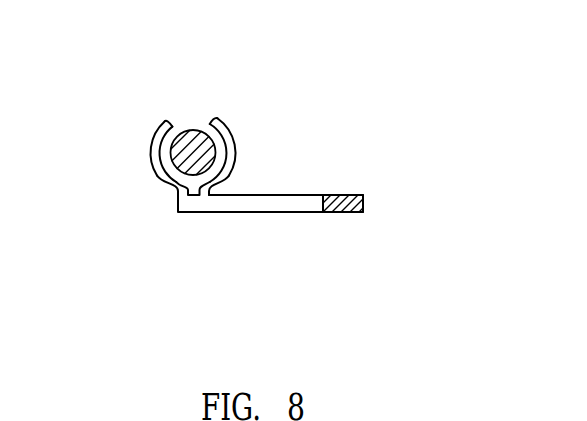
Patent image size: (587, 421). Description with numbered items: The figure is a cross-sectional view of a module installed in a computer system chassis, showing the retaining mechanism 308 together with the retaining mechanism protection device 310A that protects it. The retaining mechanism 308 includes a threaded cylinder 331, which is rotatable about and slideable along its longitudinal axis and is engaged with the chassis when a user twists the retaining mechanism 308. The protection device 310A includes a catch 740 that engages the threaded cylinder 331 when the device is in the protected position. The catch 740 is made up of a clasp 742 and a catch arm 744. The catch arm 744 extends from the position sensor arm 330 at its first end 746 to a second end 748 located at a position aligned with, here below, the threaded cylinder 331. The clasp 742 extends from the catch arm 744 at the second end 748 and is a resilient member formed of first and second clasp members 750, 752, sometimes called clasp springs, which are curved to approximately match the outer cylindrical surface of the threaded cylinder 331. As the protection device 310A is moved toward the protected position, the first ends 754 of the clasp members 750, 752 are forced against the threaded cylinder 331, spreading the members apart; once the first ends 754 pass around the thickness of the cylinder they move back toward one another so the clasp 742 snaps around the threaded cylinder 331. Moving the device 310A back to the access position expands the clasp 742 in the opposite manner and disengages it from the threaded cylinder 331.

The retaining mechanism 308 is at (204, 97).
The threaded cylinder 331 is at (202, 133).
The retaining mechanism protection device 310A is at (258, 179).
The clasp 742 is at (258, 198).
The first clasp member 750 is at (186, 119).
The second clasp member 752 is at (228, 152).
The first ends 754 is at (167, 119).
The second end 748 is at (192, 213).
The catch 740 is at (317, 246).
The catch arm 744 is at (303, 196).
The first end 746 is at (337, 214).
The position sensor arm 330 is at (364, 197).